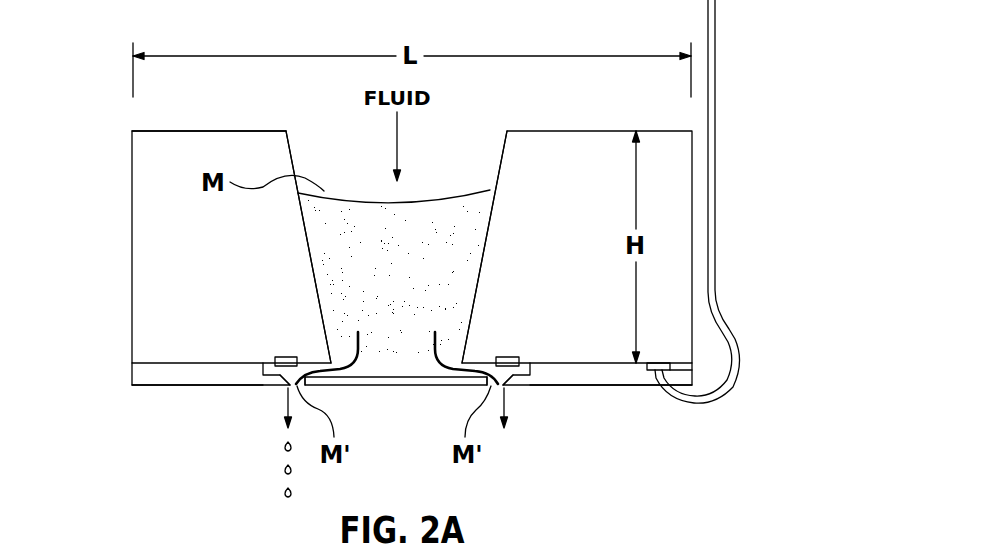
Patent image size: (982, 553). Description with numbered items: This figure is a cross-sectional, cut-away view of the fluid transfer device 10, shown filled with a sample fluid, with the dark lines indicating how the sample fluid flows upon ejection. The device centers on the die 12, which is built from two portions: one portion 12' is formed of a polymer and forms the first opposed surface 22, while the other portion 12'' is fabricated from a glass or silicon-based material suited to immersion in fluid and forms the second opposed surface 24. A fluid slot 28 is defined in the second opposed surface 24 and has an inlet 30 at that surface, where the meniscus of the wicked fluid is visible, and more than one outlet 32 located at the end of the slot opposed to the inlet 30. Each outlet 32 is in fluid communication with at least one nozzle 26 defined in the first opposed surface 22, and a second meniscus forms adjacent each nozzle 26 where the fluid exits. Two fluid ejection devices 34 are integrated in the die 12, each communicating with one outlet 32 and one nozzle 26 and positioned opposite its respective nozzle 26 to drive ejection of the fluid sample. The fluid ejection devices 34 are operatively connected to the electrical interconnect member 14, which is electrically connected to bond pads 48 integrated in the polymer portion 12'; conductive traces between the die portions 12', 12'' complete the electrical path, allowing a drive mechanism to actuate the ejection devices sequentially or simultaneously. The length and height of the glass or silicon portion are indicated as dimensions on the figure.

The fluid transfer device 10 is at (118, 430).
The die 12 is at (359, 247).
The die portion 12' is at (412, 423).
The die portion 12'' is at (400, 247).
The electrical interconnect member 14 is at (715, 163).
The first opposed surface 22 is at (147, 387).
The second opposed surface 24 is at (148, 131).
The nozzle 26 is at (283, 386).
The fluid slot 28 is at (313, 267).
The inlet 30 is at (306, 120).
The outlet 32 is at (448, 349).
The fluid ejection device 34 is at (287, 357).
The bond pad 48 is at (650, 371).